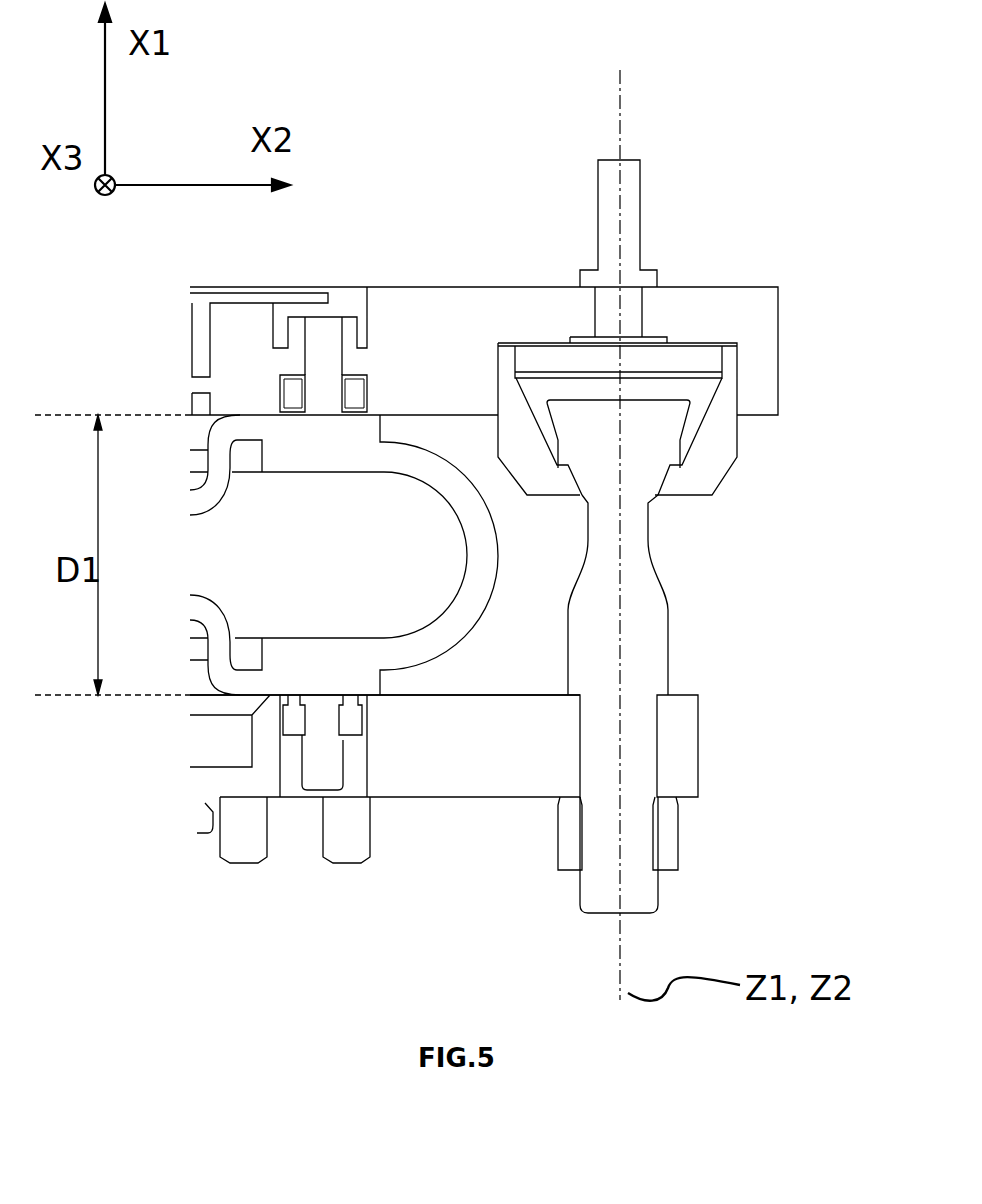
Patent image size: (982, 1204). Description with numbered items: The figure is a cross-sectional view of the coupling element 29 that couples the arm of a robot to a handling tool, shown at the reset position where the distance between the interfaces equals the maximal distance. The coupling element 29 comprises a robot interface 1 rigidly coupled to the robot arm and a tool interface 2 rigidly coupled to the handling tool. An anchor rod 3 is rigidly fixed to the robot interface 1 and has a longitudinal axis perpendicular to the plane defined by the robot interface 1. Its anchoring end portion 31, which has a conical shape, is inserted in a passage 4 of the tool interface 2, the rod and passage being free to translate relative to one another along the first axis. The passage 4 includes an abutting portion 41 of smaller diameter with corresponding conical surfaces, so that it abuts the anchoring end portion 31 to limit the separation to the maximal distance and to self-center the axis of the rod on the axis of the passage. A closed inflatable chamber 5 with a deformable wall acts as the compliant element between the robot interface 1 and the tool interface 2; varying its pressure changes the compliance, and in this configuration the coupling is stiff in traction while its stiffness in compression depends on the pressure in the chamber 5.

The robot interface 1 is at (220, 787).
The tool interface 2 is at (197, 307).
The anchor rod 3 is at (657, 622).
The passage 4 is at (555, 393).
The closed inflatable chamber 5 is at (297, 475).
The coupling element 29 is at (778, 275).
The anchoring end portion 31 is at (630, 440).
The abutting portion 41 is at (550, 440).